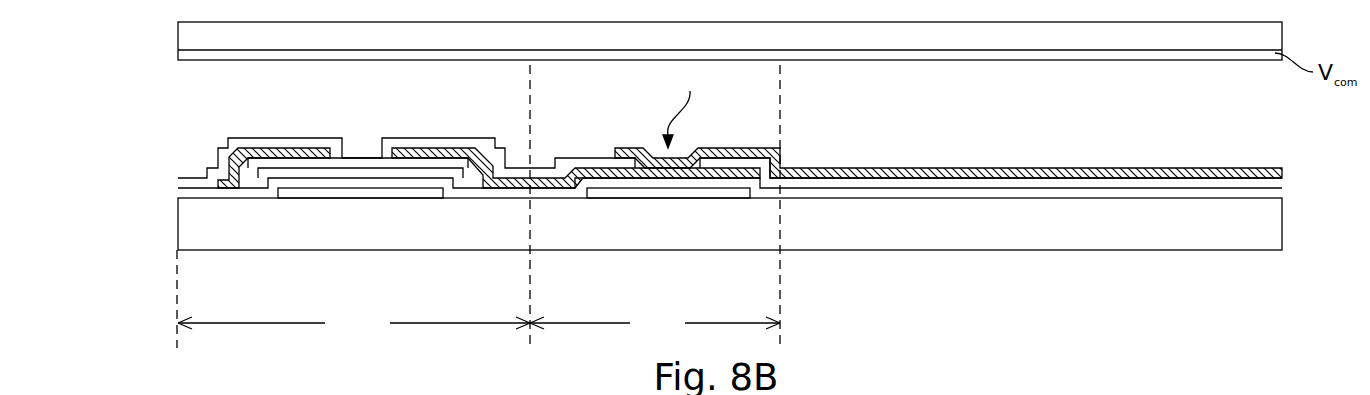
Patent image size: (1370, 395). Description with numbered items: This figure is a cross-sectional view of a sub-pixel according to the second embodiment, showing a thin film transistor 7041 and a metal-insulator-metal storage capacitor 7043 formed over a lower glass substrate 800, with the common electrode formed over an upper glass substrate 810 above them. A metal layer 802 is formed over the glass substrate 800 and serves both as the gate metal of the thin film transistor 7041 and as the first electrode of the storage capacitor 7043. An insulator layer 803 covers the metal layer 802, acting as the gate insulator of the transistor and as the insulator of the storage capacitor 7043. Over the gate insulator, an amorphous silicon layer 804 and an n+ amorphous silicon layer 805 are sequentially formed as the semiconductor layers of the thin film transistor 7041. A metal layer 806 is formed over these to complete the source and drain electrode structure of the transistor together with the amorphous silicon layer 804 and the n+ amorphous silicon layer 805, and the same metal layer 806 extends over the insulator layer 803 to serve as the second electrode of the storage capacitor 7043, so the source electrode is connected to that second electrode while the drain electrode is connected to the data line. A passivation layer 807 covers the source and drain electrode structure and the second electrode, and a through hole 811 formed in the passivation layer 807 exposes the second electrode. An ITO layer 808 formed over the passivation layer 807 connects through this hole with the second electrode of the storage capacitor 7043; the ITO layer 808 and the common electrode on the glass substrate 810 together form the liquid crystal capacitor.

The glass substrate 800 is at (1275, 223).
The metal layer 802 is at (357, 196).
The insulator layer 803 is at (936, 194).
The amorphous silicon layer 804 is at (245, 185).
The n+ amorphous silicon layer 805 is at (255, 185).
The metal layer 806 is at (478, 160).
The passivation layer 807 is at (228, 152).
The ITO layer 808 is at (1280, 173).
The glass substrate 810 is at (1275, 33).
The through hole 811 is at (684, 108).
The thin film transistor 7041 is at (353, 206).
The metal-insulator-metal (MIM) storage capacitor 7043 is at (655, 206).